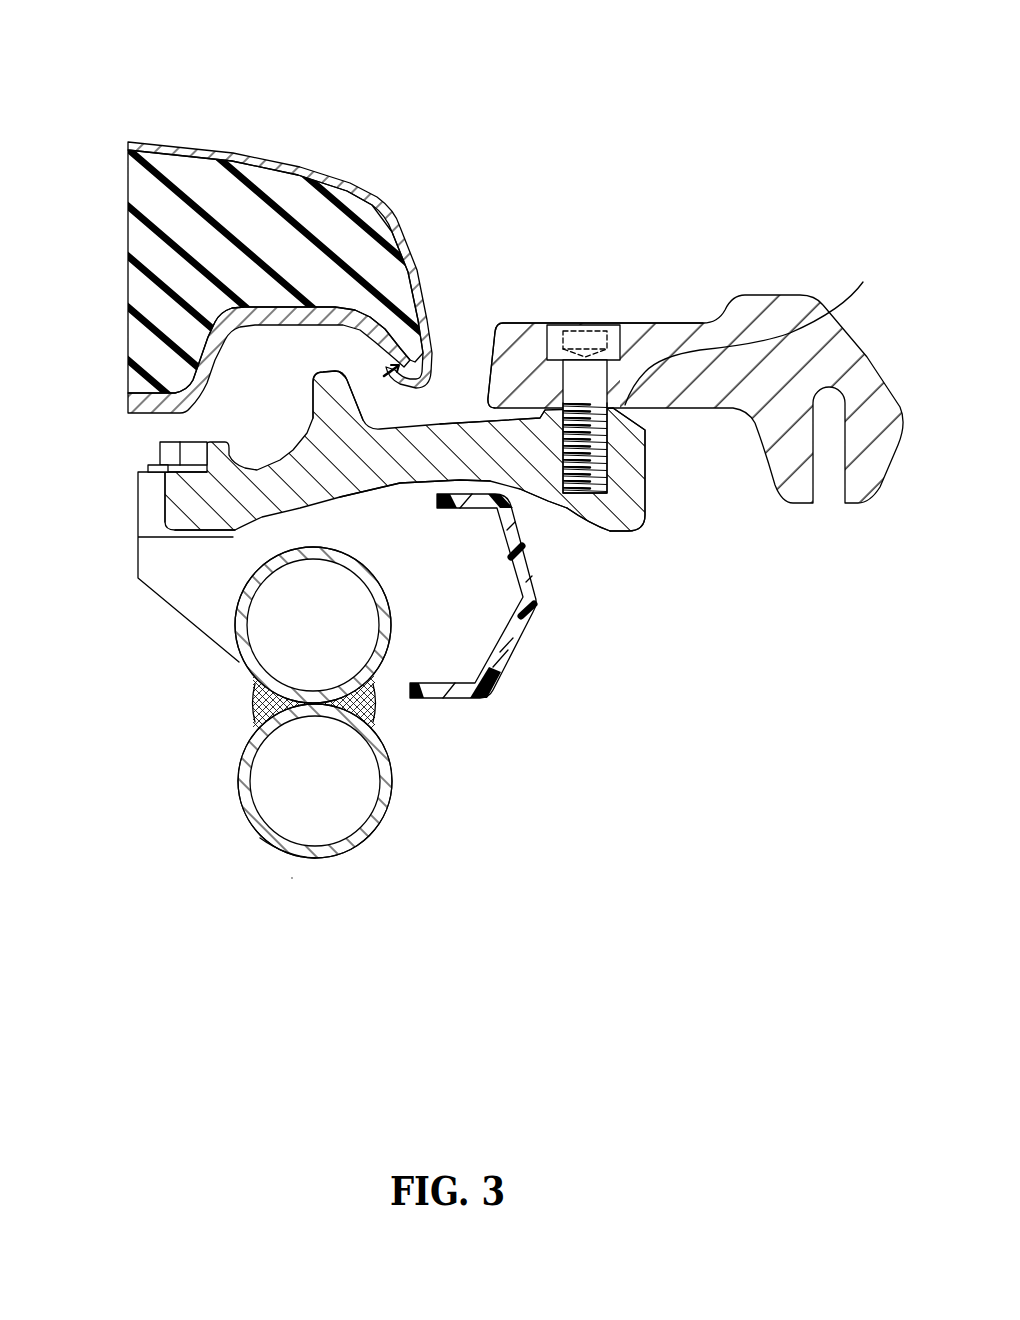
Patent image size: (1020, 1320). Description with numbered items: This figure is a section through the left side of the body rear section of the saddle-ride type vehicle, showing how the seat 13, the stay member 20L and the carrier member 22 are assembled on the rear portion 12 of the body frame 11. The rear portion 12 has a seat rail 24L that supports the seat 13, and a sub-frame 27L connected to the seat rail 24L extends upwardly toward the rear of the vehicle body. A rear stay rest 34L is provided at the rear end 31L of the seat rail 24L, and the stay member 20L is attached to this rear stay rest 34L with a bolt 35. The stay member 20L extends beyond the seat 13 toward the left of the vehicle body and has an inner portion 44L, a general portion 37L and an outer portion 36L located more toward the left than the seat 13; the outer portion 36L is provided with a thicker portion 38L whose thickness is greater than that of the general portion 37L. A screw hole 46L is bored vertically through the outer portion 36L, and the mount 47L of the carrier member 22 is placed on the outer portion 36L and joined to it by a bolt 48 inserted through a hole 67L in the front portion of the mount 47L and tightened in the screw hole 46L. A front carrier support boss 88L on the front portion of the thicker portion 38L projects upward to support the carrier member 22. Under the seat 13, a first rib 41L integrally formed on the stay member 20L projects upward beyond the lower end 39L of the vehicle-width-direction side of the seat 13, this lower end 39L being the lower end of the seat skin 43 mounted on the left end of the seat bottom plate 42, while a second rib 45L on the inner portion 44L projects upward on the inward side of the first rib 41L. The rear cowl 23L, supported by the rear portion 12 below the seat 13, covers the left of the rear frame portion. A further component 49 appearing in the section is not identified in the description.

The seat 13 is at (236, 135).
The first rib 41L is at (327, 375).
The seat skin 43 is at (348, 172).
The pad 49 is at (347, 247).
The seat bottom plate 42 is at (345, 306).
The bolt 48 is at (587, 333).
The mount 47L is at (643, 322).
The hole 67L is at (598, 367).
The front carrier support boss 88L is at (762, 329).
The carrier member 22 is at (768, 278).
The outer portion 36L is at (547, 425).
The second rib 45L is at (217, 441).
The bolt 35 is at (138, 474).
The inner portion 44L is at (220, 488).
The rear stay rest 34L is at (197, 612).
The rear end 31L is at (235, 628).
The sub-frame 27L is at (238, 797).
The rear portion 12 is at (267, 843).
The body frame 11 is at (292, 878).
The seat rail 24L is at (386, 664).
The general portion 37L is at (422, 473).
The rear cowl 23L is at (513, 647).
The lower end 39L is at (413, 387).
The screw hole 46L is at (613, 507).
The stay member 20L is at (621, 537).
The thicker portion 38L is at (632, 477).